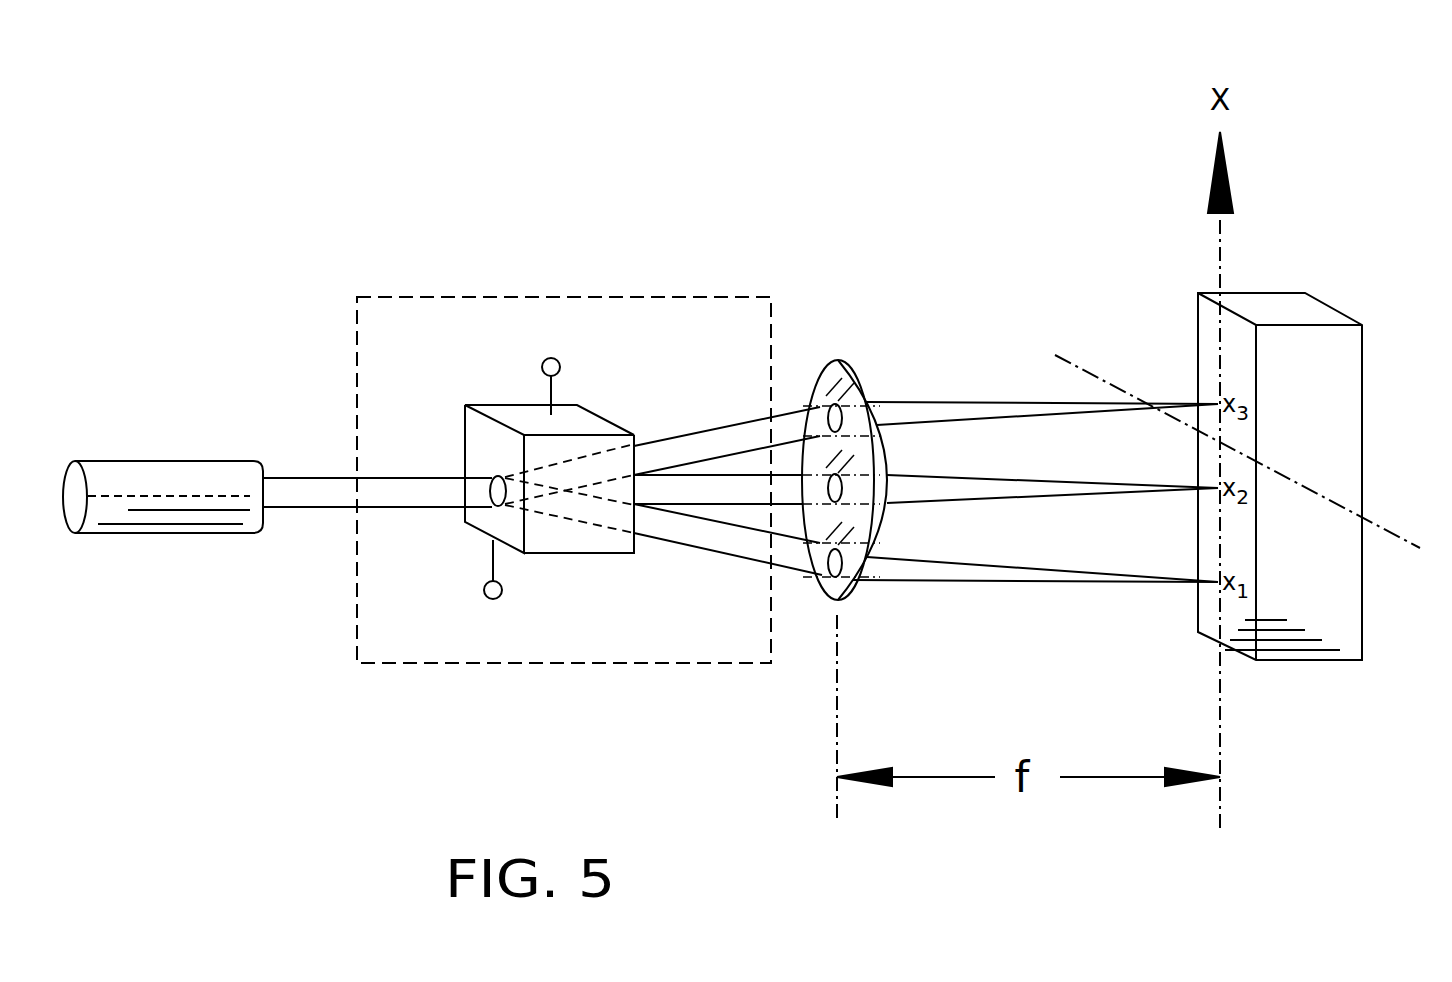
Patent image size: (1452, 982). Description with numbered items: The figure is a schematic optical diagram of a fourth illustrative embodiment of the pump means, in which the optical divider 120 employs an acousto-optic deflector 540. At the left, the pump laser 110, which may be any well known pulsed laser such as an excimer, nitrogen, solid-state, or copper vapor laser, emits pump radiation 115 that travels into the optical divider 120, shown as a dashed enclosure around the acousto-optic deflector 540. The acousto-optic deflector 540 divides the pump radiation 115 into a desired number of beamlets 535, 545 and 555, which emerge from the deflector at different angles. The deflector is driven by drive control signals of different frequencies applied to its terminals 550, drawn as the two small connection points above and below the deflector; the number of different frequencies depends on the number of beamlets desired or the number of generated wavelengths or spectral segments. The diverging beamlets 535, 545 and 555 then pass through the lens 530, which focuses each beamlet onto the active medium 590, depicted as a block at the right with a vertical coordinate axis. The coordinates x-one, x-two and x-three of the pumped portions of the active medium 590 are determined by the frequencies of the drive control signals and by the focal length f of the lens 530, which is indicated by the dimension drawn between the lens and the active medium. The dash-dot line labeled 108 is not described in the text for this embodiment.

The scan line on target surface 108 is at (1373, 520).
The pump laser 110 is at (133, 472).
The pump radiation 115 is at (323, 488).
The optical divider 120 is at (383, 330).
The lens 530 is at (840, 373).
The beamlet 535 is at (740, 543).
The acousto-optic deflector 540 is at (483, 518).
The beamlet 545 is at (735, 490).
The terminals 550 is at (541, 367).
The beamlet 555 is at (655, 452).
The active medium 590 is at (1200, 322).